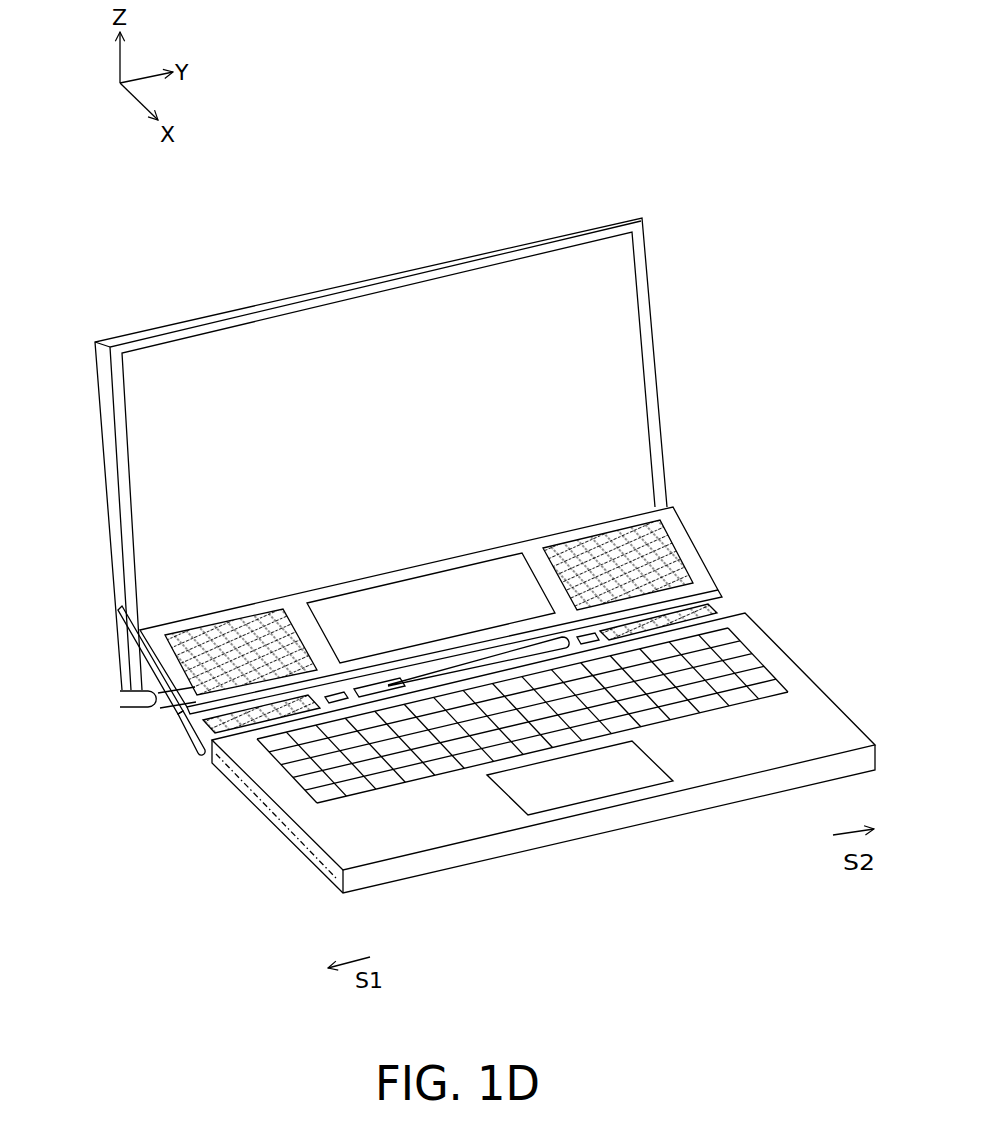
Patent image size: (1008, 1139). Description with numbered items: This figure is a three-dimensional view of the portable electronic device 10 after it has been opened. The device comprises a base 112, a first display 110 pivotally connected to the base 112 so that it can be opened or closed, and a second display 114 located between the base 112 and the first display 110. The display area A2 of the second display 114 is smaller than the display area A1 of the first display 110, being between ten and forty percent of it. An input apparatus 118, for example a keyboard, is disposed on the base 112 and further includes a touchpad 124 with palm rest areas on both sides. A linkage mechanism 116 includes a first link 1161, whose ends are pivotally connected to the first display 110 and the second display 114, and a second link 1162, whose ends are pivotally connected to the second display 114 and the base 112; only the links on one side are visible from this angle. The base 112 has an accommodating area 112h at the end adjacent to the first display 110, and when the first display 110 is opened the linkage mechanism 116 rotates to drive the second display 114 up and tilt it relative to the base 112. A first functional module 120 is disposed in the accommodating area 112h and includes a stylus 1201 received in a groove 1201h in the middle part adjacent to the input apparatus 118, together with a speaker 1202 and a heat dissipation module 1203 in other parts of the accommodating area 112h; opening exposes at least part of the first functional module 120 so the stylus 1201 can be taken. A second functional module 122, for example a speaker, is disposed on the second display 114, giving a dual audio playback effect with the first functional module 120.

The portable electronic device 10 is at (833, 152).
The first display 110 is at (676, 265).
The base 112 is at (828, 664).
The accommodating area 112h is at (200, 739).
The second display 114 is at (716, 537).
The linkage mechanism 116 is at (783, 1014).
The first link 1161 is at (118, 639).
The second link 1162 is at (193, 735).
The input apparatus 118 is at (739, 656).
The first functional module 120 is at (164, 995).
The stylus 1201 is at (693, 571).
The groove 1201h is at (373, 690).
The speaker 1202 is at (260, 717).
The heat dissipation module 1203 is at (332, 701).
The second functional module 122 is at (246, 650).
The touchpad 124 is at (593, 776).
The display area of the first display A1 is at (342, 385).
The display area of the second display A2 is at (503, 585).